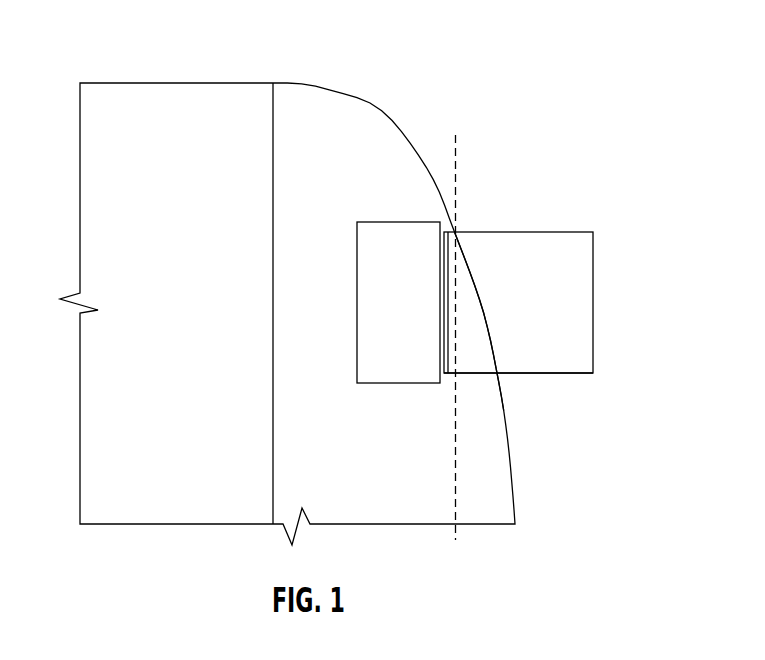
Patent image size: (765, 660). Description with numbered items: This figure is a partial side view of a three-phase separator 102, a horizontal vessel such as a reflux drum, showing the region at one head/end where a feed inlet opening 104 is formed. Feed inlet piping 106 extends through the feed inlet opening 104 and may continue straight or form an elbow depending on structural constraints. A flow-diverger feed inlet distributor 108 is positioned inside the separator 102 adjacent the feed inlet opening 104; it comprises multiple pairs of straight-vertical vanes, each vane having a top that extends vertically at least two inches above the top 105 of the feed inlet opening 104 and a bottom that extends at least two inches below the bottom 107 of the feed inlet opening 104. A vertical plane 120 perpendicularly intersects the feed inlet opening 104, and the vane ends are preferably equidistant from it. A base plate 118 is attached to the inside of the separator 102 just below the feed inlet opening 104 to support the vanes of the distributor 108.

The 3-phase separator 102 is at (335, 92).
The feed inlet opening 104 is at (485, 318).
The top of the feed inlet opening 105 is at (447, 280).
The feed inlet piping 106 is at (594, 328).
The bottom of the feed inlet opening 107 is at (497, 368).
The flow-diverger feed inlet distributor 108 is at (345, 243).
The base plate 118 is at (478, 385).
The vertical plane 120 is at (458, 155).